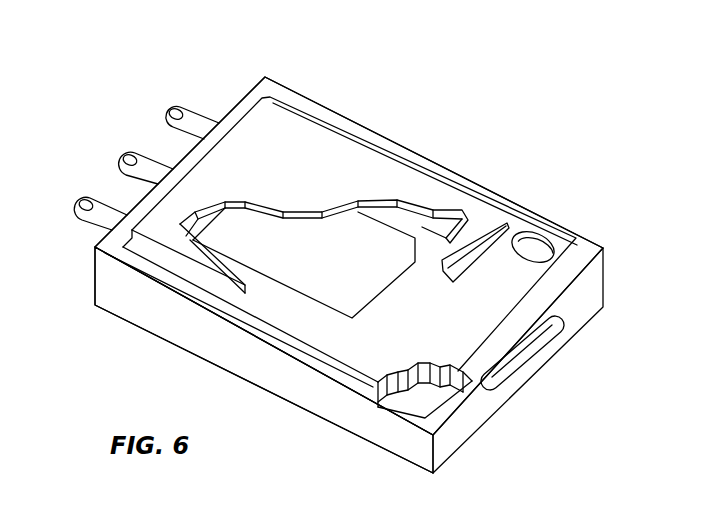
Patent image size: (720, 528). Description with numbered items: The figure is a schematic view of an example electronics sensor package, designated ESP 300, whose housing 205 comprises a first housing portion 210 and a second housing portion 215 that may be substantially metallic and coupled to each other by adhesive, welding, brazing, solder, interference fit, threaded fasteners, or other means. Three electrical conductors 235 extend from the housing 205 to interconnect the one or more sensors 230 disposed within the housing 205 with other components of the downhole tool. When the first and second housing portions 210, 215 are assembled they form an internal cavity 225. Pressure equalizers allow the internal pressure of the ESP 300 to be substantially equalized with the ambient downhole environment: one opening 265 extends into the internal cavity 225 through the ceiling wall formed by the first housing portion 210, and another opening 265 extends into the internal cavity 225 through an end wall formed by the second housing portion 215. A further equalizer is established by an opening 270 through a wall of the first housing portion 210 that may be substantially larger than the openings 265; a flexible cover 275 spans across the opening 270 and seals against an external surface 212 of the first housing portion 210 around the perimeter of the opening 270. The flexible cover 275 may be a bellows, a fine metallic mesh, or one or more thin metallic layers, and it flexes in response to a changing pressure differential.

The ESP 300 is at (396, 76).
The housing 205 is at (614, 276).
The first housing portion 210 is at (402, 357).
The external surface 212 is at (307, 320).
The second housing portion 215 is at (103, 293).
The internal cavity 225 is at (428, 403).
The sensors 230 is at (343, 272).
The electrical conductors 235 is at (198, 122).
The openings 265 is at (536, 233).
The opening 270 is at (427, 236).
The flexible cover 275 is at (293, 167).